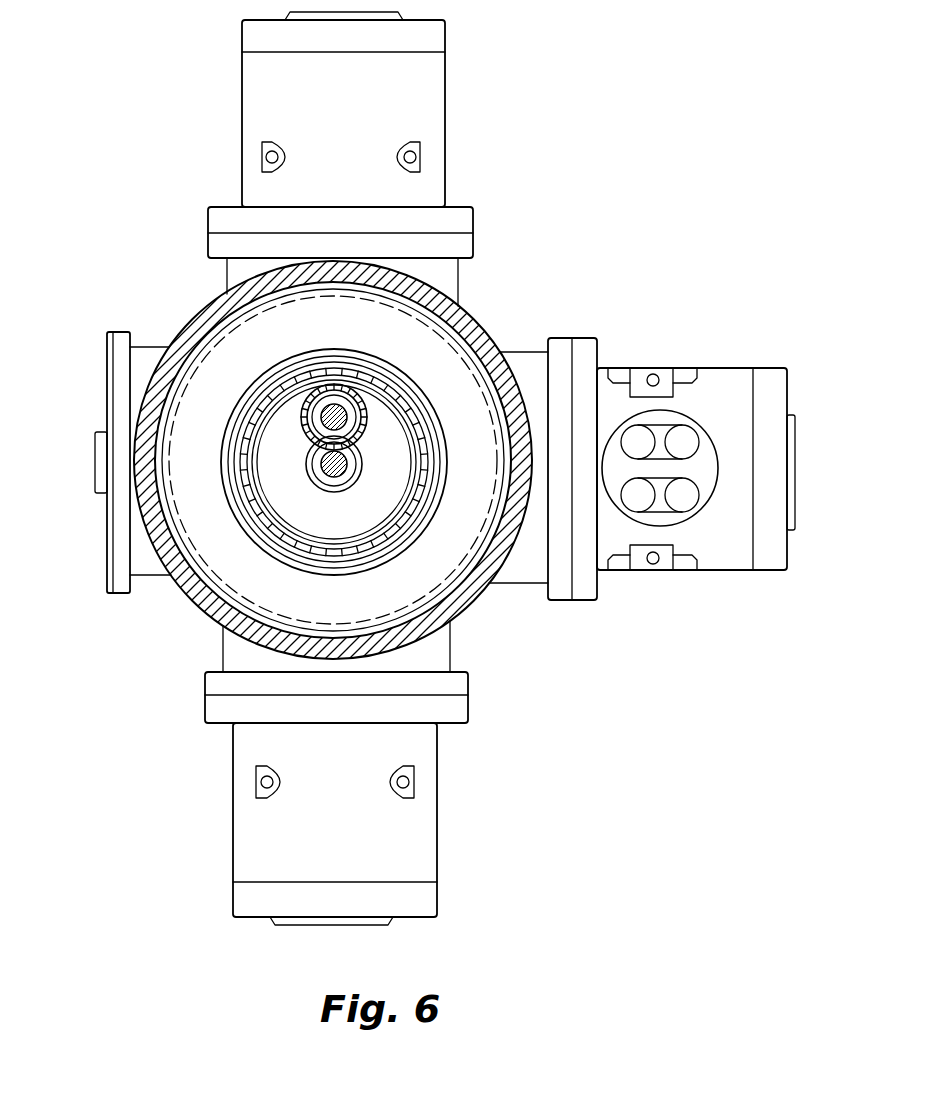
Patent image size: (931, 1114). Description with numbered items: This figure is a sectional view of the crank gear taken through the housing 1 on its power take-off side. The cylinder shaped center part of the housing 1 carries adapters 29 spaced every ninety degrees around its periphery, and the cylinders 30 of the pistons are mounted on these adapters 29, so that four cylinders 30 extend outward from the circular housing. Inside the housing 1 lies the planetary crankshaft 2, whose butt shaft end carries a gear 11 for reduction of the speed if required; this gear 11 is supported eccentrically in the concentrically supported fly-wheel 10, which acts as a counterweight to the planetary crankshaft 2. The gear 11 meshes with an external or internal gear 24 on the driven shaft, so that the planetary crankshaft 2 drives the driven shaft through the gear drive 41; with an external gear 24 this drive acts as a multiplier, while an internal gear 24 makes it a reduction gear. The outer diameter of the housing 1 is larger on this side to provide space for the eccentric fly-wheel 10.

The housing 1 is at (347, 485).
The planetary crankshaft 2 is at (377, 438).
The fly-wheel 10 is at (380, 607).
The gear 11 is at (340, 400).
The gear 24 is at (473, 628).
The adapters 29 is at (533, 377).
The cylinders 30 is at (423, 190).
The gear drive 41 is at (465, 600).